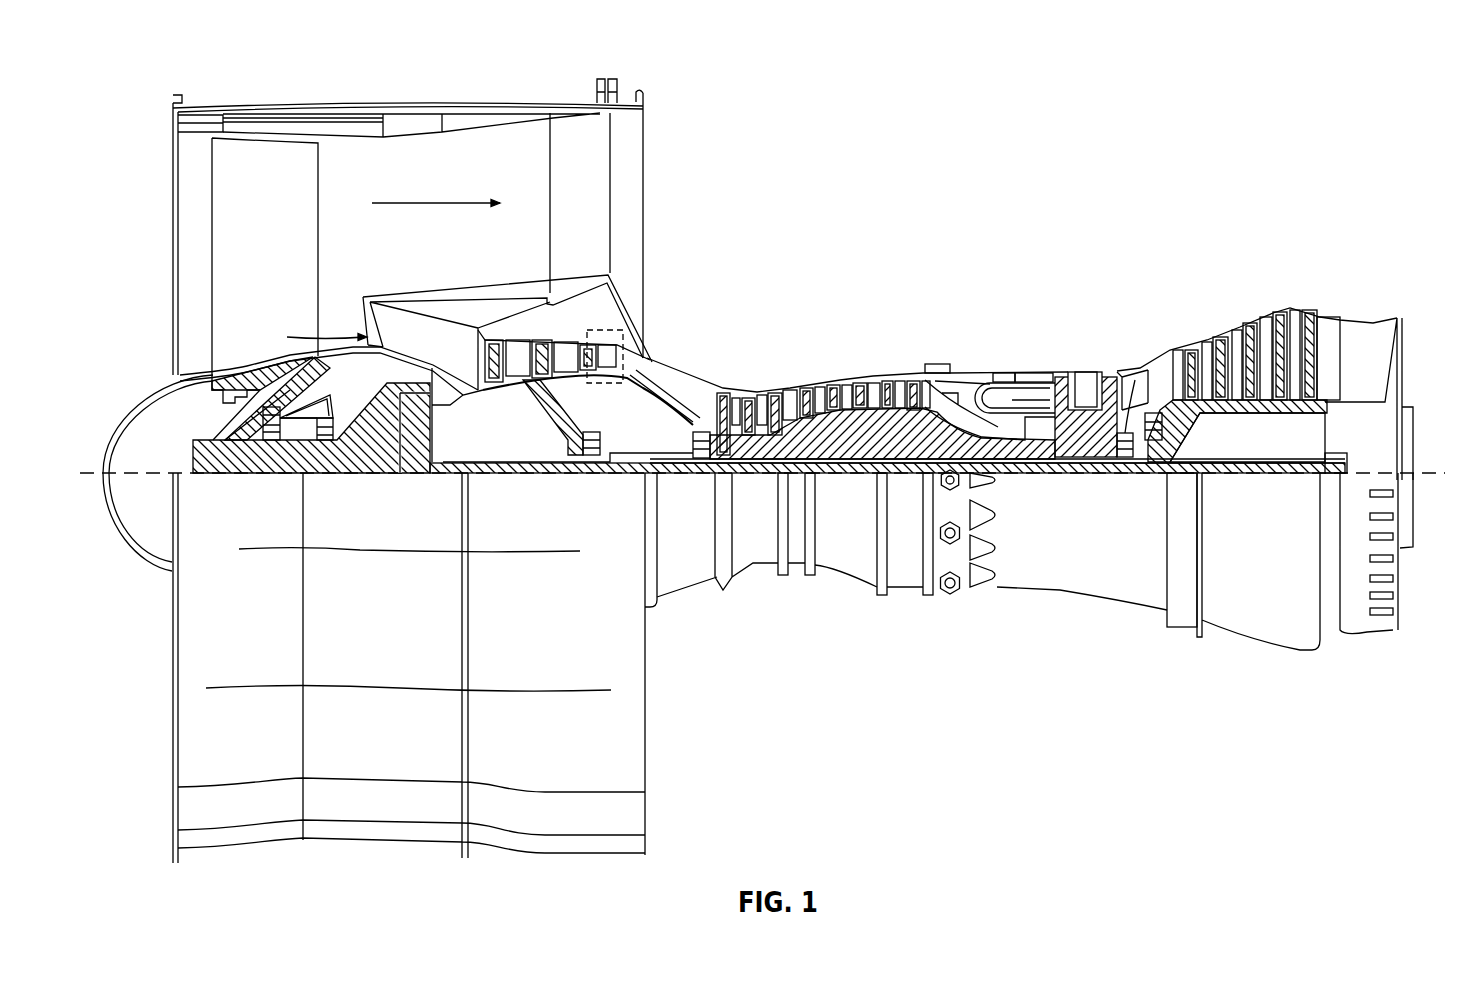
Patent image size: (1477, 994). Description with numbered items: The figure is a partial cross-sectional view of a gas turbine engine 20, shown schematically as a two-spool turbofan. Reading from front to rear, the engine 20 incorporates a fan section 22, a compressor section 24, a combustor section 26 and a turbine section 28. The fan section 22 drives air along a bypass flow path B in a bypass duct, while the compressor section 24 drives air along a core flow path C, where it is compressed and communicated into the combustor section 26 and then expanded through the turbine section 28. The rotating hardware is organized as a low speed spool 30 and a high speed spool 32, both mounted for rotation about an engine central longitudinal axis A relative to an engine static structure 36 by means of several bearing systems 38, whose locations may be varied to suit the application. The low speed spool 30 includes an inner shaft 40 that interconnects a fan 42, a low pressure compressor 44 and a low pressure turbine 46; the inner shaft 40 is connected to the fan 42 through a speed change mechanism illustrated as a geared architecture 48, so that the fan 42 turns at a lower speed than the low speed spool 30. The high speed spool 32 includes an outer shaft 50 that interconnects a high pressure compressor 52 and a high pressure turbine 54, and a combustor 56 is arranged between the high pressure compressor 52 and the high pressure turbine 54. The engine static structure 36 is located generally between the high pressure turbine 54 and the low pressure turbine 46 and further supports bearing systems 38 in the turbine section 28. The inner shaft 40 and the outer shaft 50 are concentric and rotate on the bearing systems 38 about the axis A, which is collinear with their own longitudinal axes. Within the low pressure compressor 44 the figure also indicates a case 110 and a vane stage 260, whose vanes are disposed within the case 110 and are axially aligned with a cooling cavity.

The gas turbine engine 20 is at (1222, 146).
The fan section 22 is at (285, 98).
The compressor section 24 is at (882, 360).
The combustor section 26 is at (1018, 343).
The turbine section 28 is at (1265, 360).
The low speed spool 30 is at (870, 477).
The high speed spool 32 is at (920, 425).
The engine static structure 36 is at (907, 593).
The bearing systems 38 is at (275, 440).
The inner shaft 40 is at (660, 473).
The fan 42 is at (287, 231).
The low pressure compressor 44 is at (557, 340).
The low pressure turbine 46 is at (1253, 332).
The geared architecture 48 is at (413, 440).
The outer shaft 50 is at (1032, 455).
The high pressure compressor 52 is at (825, 443).
The high pressure turbine 54 is at (1087, 367).
The combustor 56 is at (1013, 390).
The case 110 is at (567, 337).
The vane stage 260 is at (622, 337).
The engine central longitudinal axis A is at (1423, 470).
The bypass flow path B is at (437, 202).
The core flow path C is at (297, 332).